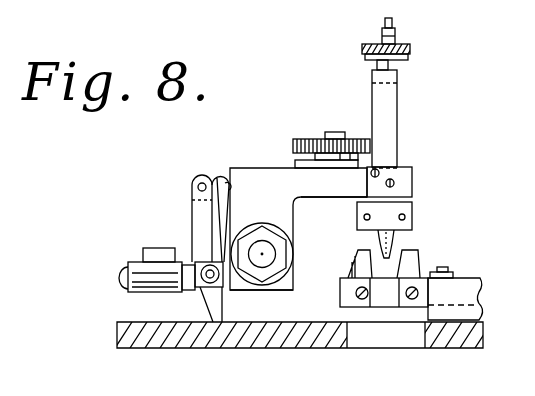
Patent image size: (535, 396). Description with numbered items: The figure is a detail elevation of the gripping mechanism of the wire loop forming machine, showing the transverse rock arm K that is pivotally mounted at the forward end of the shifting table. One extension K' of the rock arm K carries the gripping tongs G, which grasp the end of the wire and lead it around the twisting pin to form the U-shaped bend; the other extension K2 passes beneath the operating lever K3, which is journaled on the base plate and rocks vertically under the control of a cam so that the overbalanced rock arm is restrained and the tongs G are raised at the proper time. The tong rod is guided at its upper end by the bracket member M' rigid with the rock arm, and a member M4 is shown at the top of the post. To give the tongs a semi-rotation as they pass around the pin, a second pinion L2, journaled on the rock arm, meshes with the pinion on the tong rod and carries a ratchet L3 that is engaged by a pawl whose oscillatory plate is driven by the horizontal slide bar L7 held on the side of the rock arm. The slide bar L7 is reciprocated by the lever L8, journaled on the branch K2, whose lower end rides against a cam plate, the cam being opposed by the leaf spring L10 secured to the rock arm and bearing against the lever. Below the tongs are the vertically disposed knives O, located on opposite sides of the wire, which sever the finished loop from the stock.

The adjusting wheel M4 is at (412, 44).
The bracket member M' is at (371, 133).
The second pinion L2 is at (315, 139).
The ratchet L3 is at (312, 158).
The slide bar L7 is at (218, 174).
The rock arm K is at (298, 229).
The leaf spring L10 is at (243, 230).
The extension of rock arm K' is at (334, 212).
The gripping tongs G is at (393, 245).
The knives O is at (353, 264).
The operating lever K3 is at (153, 250).
The lever L8 is at (196, 232).
The extension of rock arm K2 is at (232, 291).